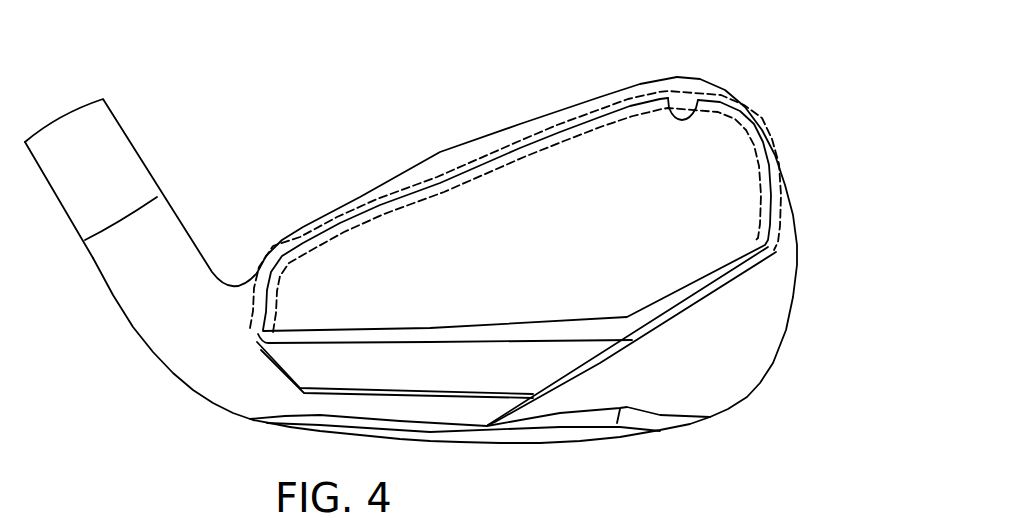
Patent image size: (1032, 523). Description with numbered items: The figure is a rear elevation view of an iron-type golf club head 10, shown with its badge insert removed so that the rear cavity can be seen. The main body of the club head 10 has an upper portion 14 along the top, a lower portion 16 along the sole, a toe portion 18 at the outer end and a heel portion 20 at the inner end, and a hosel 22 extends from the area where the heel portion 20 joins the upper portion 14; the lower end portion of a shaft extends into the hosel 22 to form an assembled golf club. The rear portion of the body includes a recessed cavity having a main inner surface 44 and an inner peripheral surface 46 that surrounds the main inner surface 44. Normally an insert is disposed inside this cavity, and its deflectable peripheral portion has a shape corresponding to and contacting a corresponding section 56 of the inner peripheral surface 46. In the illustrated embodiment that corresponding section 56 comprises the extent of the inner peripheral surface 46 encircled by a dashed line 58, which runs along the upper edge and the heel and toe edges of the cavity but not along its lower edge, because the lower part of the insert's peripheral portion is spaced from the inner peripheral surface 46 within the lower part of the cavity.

The iron-type golf club head 10 is at (324, 112).
The upper portion 14 is at (455, 155).
The lower portion 16 is at (583, 443).
The toe portion 18 is at (797, 273).
The heel portion 20 is at (232, 414).
The hosel 22 is at (183, 232).
The main inner surface 44 is at (697, 150).
The inner peripheral surface 46 is at (700, 117).
The section of the inner peripheral surface 56 is at (760, 167).
The dashed line 58 is at (785, 207).